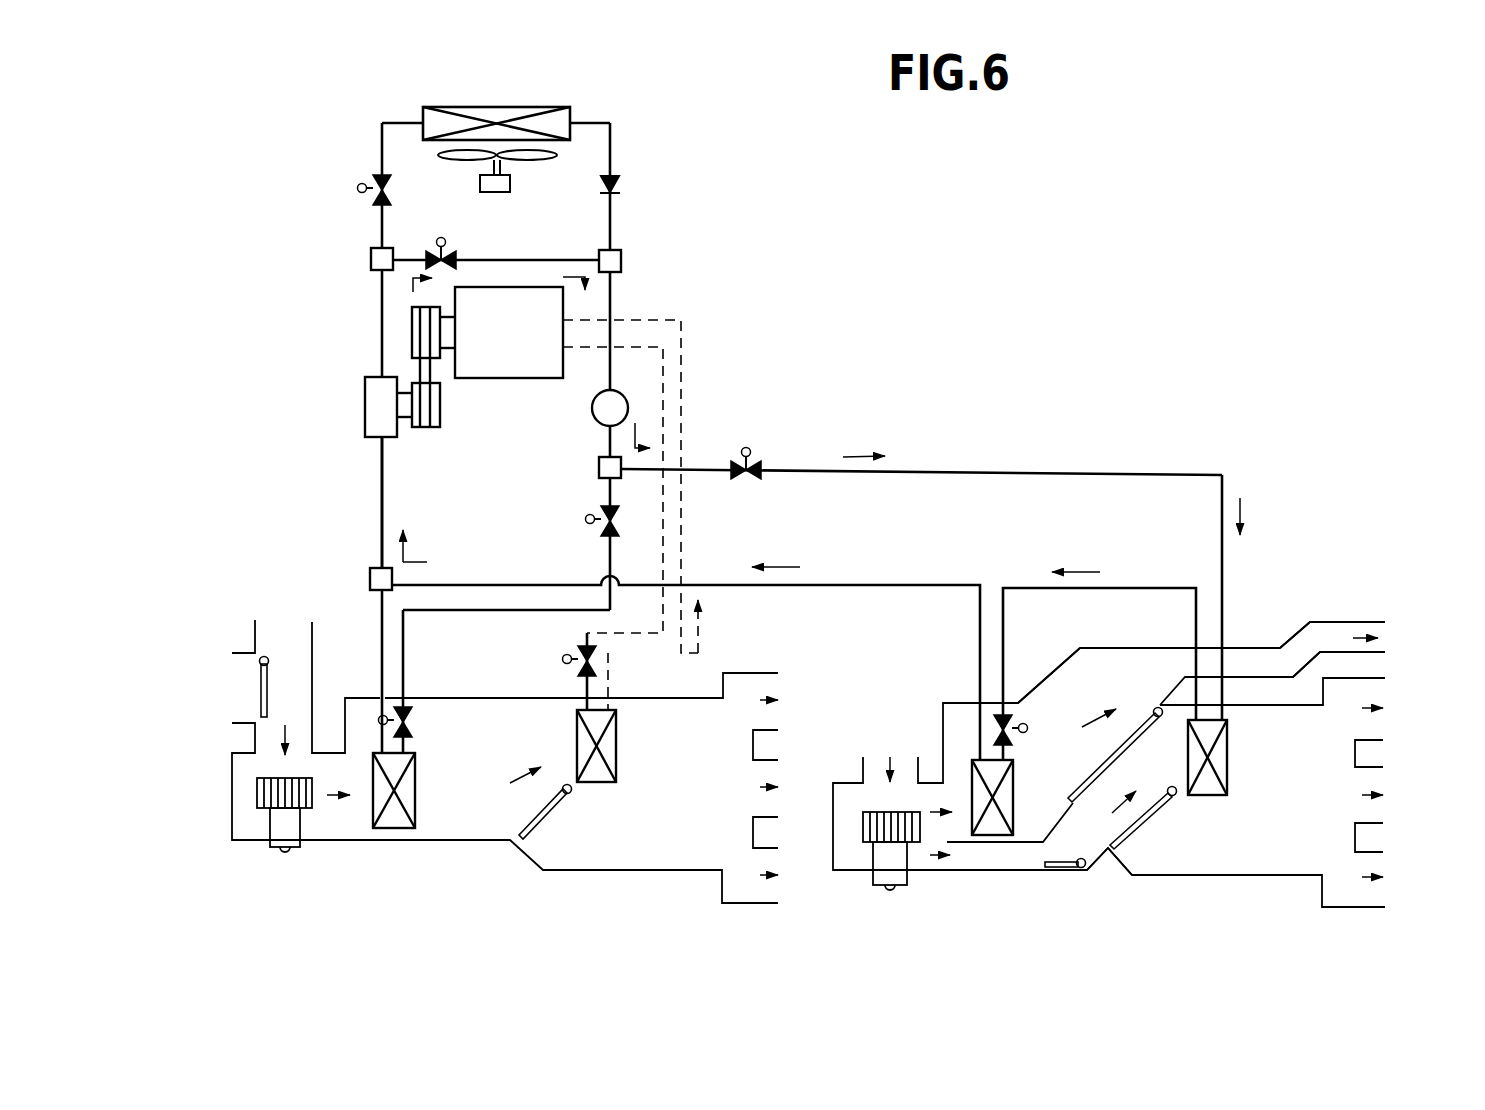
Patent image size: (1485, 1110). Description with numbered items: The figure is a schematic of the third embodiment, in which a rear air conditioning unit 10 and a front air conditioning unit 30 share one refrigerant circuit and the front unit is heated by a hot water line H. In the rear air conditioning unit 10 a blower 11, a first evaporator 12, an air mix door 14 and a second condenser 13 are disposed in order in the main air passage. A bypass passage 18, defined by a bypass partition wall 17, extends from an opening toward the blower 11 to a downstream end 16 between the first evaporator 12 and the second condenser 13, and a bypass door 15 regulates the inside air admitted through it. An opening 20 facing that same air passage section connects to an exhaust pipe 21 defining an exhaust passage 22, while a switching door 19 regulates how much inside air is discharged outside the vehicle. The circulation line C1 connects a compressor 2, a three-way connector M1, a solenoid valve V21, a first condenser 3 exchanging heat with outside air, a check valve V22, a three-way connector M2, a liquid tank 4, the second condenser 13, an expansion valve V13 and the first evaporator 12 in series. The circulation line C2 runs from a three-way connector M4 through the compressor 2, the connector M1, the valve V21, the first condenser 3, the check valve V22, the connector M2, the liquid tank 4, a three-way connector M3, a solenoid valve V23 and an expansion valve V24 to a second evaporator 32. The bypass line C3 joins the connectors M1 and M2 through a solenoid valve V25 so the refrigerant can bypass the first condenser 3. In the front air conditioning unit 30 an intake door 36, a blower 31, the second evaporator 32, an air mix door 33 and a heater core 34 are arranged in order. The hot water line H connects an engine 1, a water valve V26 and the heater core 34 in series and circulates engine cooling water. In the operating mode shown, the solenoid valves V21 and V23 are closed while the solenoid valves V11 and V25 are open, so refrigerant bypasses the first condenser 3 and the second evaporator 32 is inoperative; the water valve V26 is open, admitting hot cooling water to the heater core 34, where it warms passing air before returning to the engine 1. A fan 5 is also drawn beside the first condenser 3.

The engine 1 is at (503, 378).
The compressor 2 is at (365, 390).
The first condenser 3 is at (548, 107).
The liquid tank 4 is at (616, 393).
The fan 5 is at (463, 161).
The rear air conditioning unit 10 is at (1280, 875).
The blower 11 is at (873, 850).
The first evaporator 12 is at (975, 760).
The second condenser 13 is at (1207, 795).
The air mix door 14 is at (1150, 820).
The bypass door 15 is at (1060, 870).
The downstream end 16 is at (1092, 827).
The bypass partition wall 17 is at (990, 845).
The bypass passage 18 is at (1015, 862).
The switching door 19 is at (1133, 730).
The opening 20 is at (1087, 697).
The exhaust pipe 21 is at (1342, 622).
The exhaust passage 22 is at (1250, 660).
The front air conditioning unit 30 is at (445, 840).
The blower 31 is at (265, 808).
The second evaporator 32 is at (385, 828).
The air mix door 33 is at (550, 815).
The heater core 34 is at (617, 735).
The intake door 36 is at (268, 690).
The solenoid valve V11 is at (748, 446).
The expansion valve V13 is at (1012, 722).
The solenoid valve V21 is at (376, 182).
The check valve V22 is at (620, 186).
The solenoid valve V23 is at (588, 527).
The expansion valve V24 is at (417, 703).
The solenoid valve V25 is at (485, 227).
The water valve V26 is at (578, 652).
The three-way connector M1 is at (382, 273).
The three-way connector M2 is at (620, 258).
The three-way connector M3 is at (598, 468).
The three-way connector M4 is at (372, 570).
The refrigerant circulation line C1 is at (996, 473).
The refrigerant circulation line C2 is at (382, 470).
The refrigerant bypass line C3 is at (558, 260).
The hot water line H is at (682, 367).